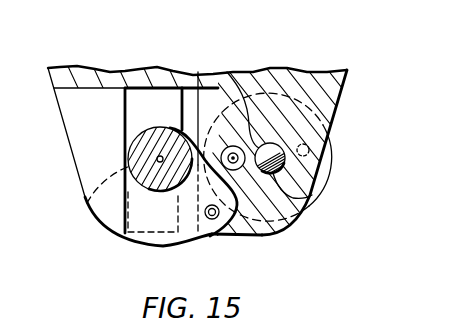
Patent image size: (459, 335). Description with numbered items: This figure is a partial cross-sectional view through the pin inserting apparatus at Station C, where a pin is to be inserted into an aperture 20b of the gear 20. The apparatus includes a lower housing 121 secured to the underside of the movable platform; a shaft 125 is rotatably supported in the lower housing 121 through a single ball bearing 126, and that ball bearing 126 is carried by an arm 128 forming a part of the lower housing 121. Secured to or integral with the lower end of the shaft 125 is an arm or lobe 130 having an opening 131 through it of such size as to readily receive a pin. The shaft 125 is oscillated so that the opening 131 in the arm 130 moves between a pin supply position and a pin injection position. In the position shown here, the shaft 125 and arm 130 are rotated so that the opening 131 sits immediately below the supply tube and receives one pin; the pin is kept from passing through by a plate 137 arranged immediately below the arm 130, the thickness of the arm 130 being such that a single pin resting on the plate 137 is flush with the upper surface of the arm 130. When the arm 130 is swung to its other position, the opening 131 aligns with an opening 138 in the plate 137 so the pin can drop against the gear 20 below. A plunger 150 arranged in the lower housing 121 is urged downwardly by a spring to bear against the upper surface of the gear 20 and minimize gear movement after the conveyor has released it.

The gear 20 is at (331, 168).
The aperture 20b is at (309, 147).
The lower housing 121 is at (300, 95).
The shaft 125 is at (150, 143).
The ball bearing 126 is at (87, 203).
The arm 128 is at (95, 162).
The arm or lobe 130 is at (150, 224).
The opening 131 is at (212, 220).
The plate 137 is at (208, 103).
The opening 138 is at (231, 146).
The plunger 150 is at (314, 196).